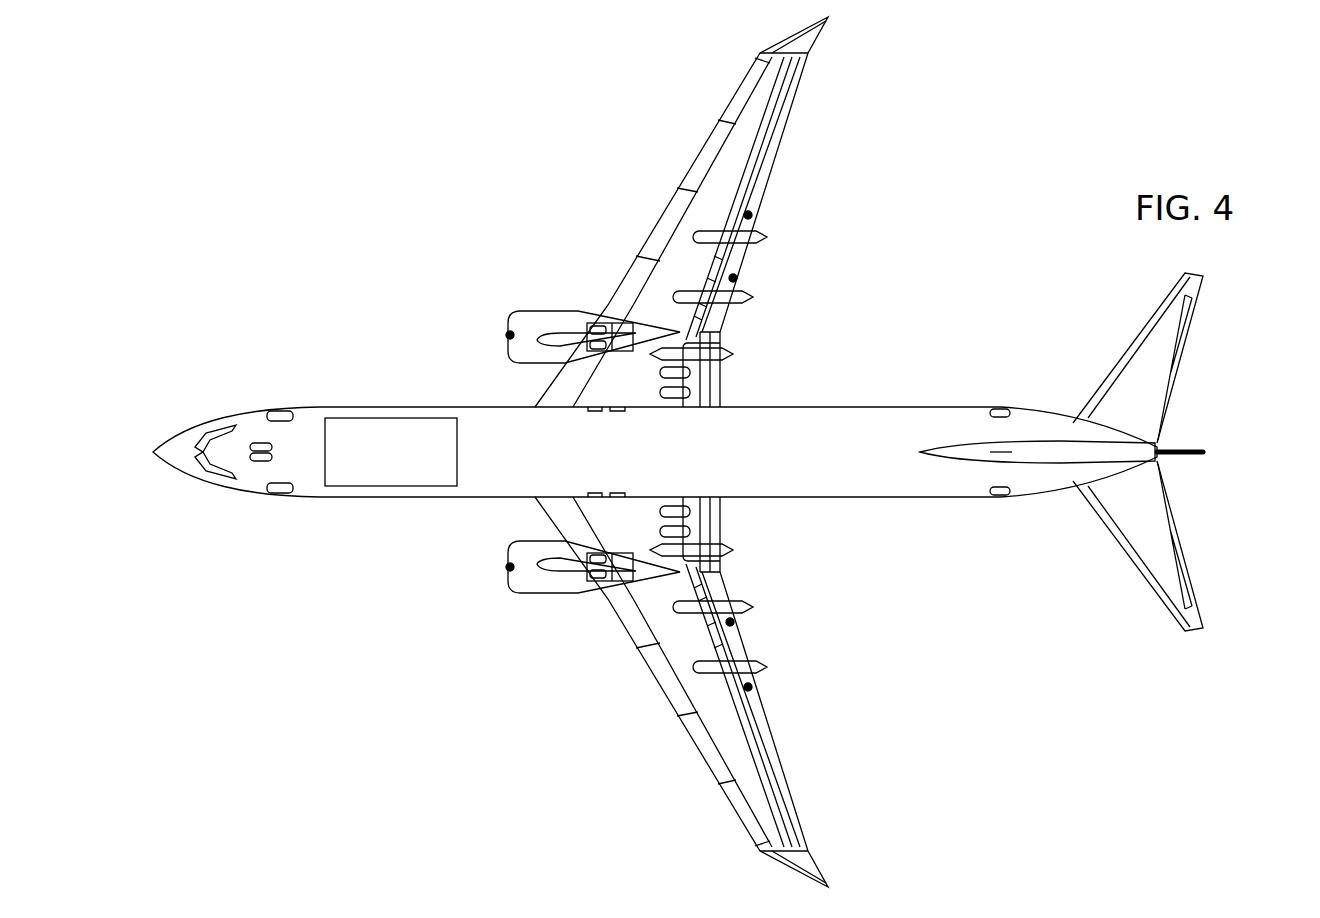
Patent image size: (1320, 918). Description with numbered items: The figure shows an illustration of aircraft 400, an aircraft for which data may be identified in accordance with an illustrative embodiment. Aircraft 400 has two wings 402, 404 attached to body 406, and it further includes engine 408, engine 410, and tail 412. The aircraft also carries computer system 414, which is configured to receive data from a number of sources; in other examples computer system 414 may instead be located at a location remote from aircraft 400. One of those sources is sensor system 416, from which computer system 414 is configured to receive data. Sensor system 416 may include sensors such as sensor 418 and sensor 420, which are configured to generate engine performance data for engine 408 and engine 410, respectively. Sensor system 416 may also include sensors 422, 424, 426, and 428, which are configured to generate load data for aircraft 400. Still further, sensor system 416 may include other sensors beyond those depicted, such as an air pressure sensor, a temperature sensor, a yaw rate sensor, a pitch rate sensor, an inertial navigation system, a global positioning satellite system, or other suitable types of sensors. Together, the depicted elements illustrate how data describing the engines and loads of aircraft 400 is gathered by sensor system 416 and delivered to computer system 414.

The aircraft 400 is at (366, 163).
The wing 402 is at (786, 132).
The wing 404 is at (786, 772).
The body 406 is at (312, 404).
The engine 408 is at (545, 310).
The engine 410 is at (543, 588).
The tail 412 is at (1138, 358).
The computer system 414 is at (458, 452).
The sensor system 416 is at (500, 594).
The sensor 418 is at (506, 334).
The sensor 420 is at (506, 569).
The sensor 422 is at (752, 214).
The sensor 424 is at (737, 277).
The sensor 426 is at (734, 623).
The sensor 428 is at (752, 688).